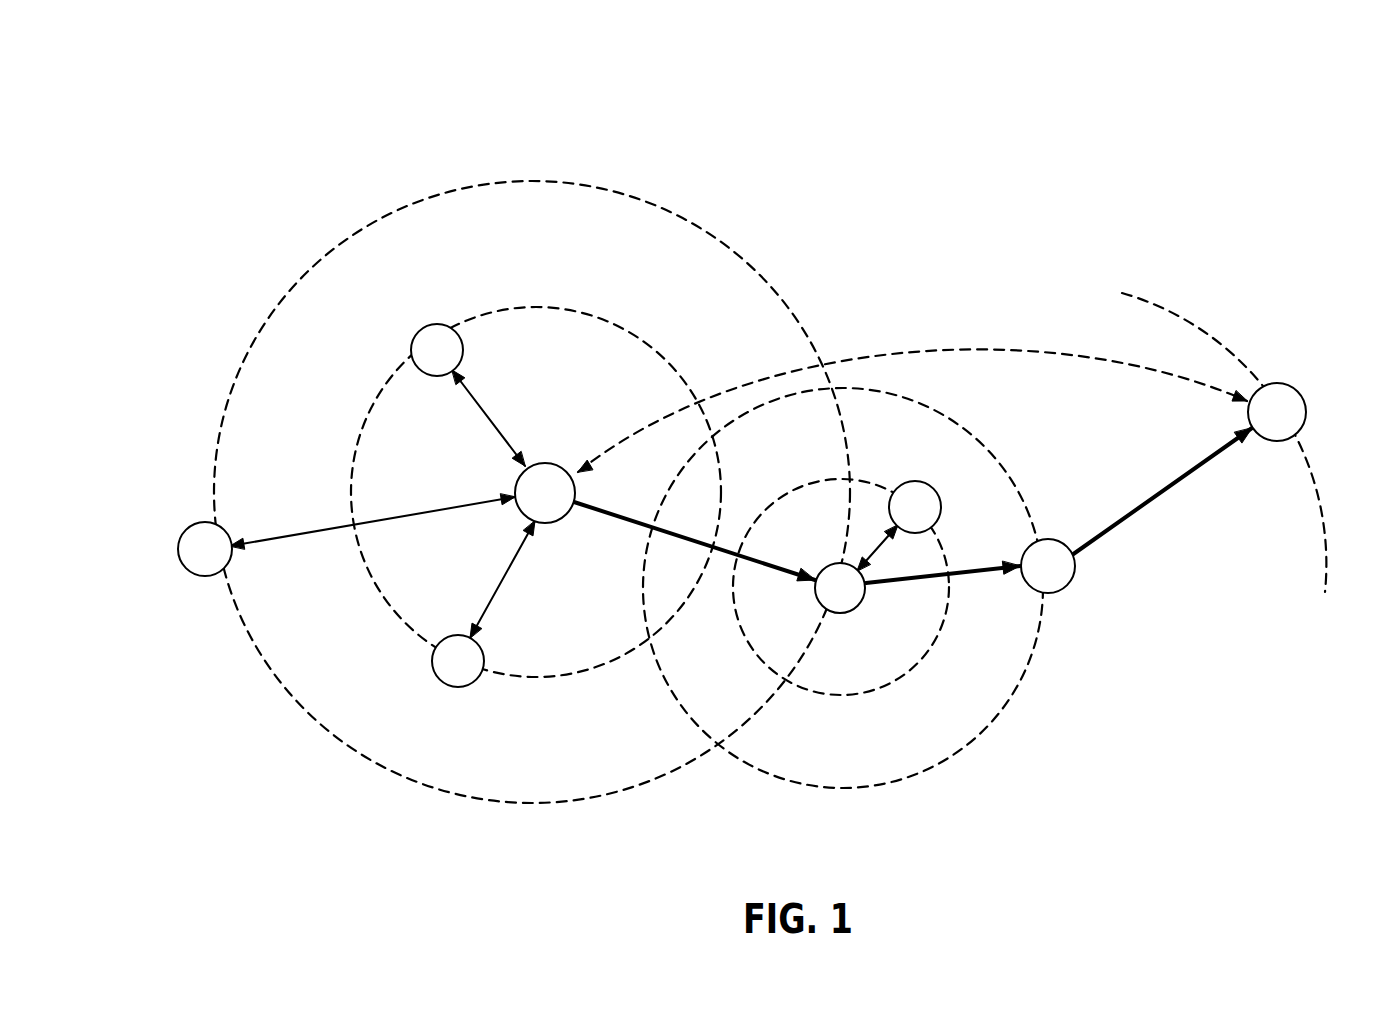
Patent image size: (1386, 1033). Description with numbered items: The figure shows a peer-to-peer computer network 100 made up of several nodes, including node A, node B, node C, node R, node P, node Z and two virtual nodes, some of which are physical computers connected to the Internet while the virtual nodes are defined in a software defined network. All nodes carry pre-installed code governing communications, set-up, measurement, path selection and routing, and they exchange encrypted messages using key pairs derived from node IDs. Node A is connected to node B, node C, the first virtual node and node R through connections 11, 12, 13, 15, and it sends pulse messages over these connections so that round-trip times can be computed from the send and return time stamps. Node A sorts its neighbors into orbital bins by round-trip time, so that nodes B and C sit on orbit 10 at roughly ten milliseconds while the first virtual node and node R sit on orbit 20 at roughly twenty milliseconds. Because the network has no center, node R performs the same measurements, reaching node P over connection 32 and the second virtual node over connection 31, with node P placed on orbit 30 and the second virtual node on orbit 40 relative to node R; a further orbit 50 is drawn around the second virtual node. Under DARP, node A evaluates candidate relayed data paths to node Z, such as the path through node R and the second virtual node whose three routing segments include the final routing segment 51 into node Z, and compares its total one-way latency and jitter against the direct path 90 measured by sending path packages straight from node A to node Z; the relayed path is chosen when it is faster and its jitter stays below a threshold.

The peer-to-peer computer network 100 is at (1013, 152).
The orbit 10 is at (519, 313).
The orbit 20 is at (748, 205).
The orbit 30 is at (877, 690).
The orbit 40 is at (1025, 680).
The orbit 50 is at (1185, 317).
The direct path 90 is at (935, 348).
The connection 11 is at (487, 417).
The connection 12 is at (390, 517).
The connection 13 is at (492, 588).
The connection 15 is at (620, 527).
The connection 31 is at (967, 577).
The connection 32 is at (873, 552).
The routing segment 51 is at (1168, 495).